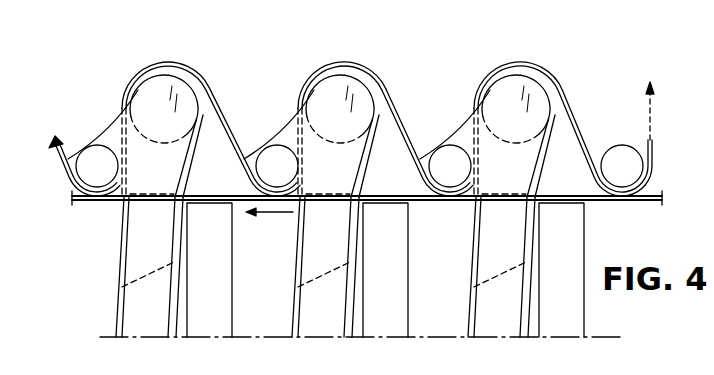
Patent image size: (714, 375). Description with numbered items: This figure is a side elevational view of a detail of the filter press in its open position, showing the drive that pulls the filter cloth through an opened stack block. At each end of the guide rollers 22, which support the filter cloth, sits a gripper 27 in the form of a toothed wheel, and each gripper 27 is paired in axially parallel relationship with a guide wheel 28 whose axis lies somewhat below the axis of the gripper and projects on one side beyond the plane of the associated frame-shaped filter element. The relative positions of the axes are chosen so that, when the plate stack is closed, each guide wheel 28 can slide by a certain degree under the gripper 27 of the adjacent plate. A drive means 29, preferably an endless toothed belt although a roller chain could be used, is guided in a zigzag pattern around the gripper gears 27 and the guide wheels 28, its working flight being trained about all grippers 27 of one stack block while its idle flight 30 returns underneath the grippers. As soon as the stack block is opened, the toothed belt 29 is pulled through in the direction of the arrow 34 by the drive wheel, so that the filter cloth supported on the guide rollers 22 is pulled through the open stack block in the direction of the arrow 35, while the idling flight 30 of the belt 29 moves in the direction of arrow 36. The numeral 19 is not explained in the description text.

The belt strip between loops 19 is at (397, 131).
The guide roller 22 is at (378, 63).
The gripper 27 is at (330, 78).
The guide wheel 28 is at (274, 142).
The drive means 29 is at (214, 100).
The idle flight 30 is at (248, 214).
The arrow 34 is at (590, 140).
The arrow 35 is at (379, 181).
The arrow 36 is at (278, 214).